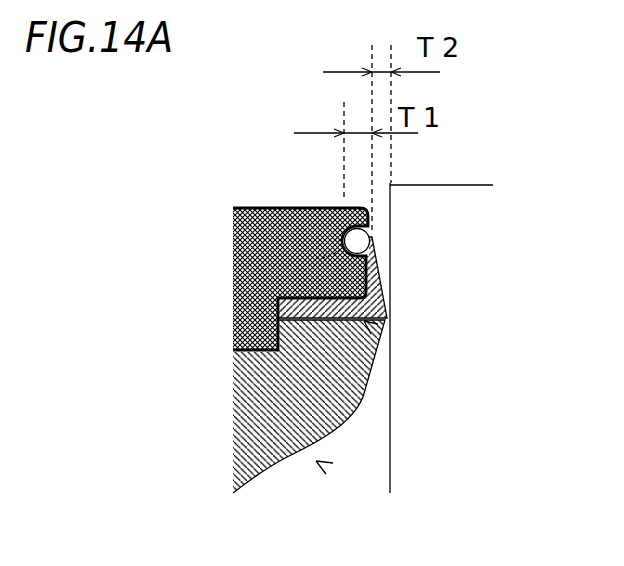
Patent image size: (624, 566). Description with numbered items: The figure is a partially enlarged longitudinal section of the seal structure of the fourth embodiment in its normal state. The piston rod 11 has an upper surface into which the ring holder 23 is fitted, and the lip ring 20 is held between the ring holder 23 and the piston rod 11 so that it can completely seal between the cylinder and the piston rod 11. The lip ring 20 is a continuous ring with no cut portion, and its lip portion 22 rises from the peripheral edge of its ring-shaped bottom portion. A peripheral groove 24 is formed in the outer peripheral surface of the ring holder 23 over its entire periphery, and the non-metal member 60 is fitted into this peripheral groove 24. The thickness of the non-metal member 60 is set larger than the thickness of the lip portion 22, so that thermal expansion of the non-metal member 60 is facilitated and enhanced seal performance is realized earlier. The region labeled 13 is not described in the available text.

The piston rod 11 is at (316, 461).
The rim 13 is at (325, 394).
The lip ring 20 is at (364, 321).
The lip portion 22 is at (375, 277).
The ring holder 23 is at (250, 213).
The peripheral groove 24 is at (316, 258).
The non-metal member 60 is at (360, 241).